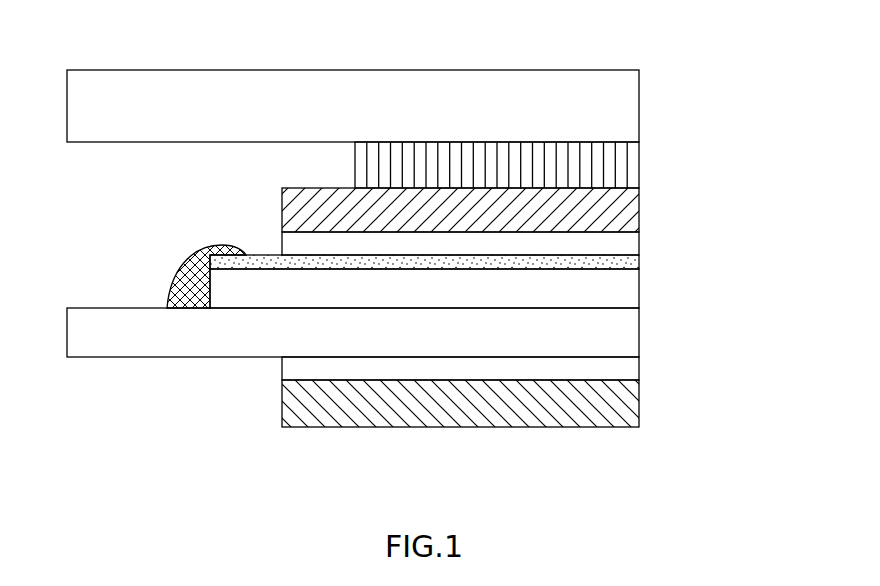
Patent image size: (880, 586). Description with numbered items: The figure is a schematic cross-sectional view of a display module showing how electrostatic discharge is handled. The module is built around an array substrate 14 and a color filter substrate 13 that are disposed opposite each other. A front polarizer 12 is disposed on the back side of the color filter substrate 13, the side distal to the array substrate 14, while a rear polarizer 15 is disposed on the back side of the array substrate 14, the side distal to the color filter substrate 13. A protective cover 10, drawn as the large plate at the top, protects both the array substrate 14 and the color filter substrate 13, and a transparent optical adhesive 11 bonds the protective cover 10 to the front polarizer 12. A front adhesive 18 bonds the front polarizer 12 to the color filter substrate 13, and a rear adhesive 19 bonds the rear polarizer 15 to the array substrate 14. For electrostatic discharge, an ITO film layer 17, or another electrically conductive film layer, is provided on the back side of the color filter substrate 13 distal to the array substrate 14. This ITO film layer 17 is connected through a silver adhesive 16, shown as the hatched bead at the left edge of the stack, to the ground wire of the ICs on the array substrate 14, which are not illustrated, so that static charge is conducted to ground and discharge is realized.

The protective cover 10 is at (523, 70).
The transparent optical adhesive 11 is at (640, 170).
The front polarizer 12 is at (640, 203).
The color filter substrate 13 is at (640, 290).
The array substrate 14 is at (640, 338).
The rear polarizer 15 is at (640, 405).
The silver adhesive 16 is at (186, 262).
The ITO film layer 17 is at (640, 261).
The front adhesive 18 is at (640, 241).
The rear adhesive 19 is at (640, 368).